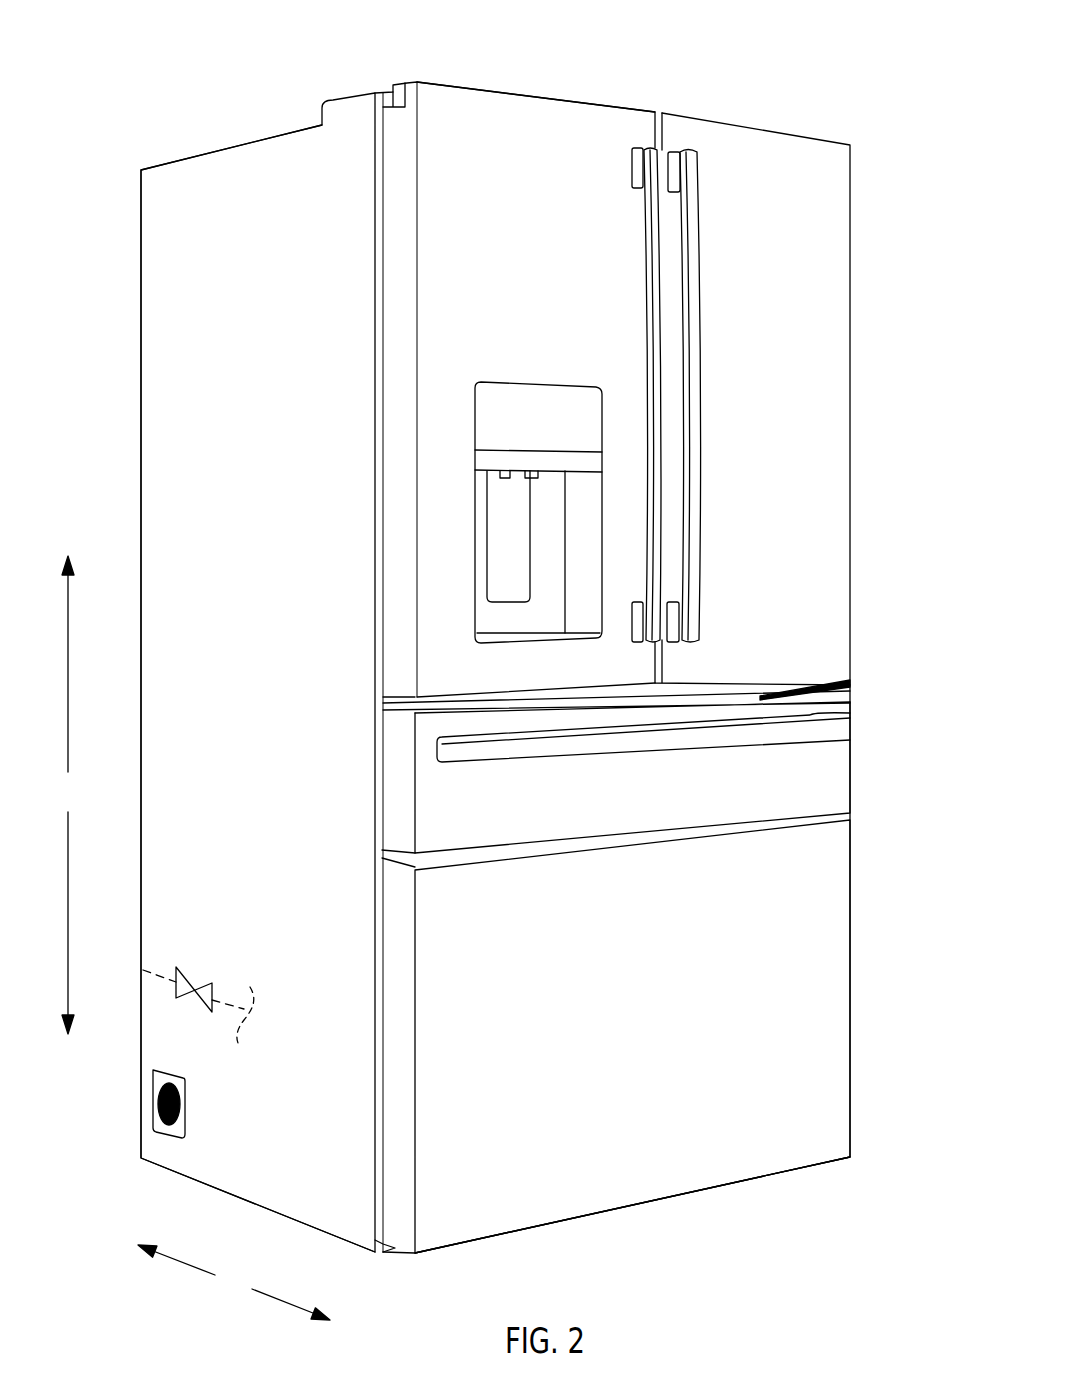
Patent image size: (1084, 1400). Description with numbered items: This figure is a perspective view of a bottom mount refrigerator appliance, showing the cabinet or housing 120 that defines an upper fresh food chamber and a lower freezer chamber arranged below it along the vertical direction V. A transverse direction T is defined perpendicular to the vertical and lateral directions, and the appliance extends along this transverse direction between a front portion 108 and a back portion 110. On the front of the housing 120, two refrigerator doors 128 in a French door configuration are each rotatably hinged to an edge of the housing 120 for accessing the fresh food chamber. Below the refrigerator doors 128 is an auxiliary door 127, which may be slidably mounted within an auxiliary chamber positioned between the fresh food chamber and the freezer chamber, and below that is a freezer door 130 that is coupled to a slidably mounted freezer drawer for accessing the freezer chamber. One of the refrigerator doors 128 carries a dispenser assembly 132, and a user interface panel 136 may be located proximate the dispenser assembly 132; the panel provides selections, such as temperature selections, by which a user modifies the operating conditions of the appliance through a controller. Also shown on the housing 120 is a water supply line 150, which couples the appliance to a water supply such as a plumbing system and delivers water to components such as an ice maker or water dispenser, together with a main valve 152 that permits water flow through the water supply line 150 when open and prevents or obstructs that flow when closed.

The front portion 108 is at (667, 1220).
The back portion 110 is at (125, 1058).
The housing 120 is at (193, 262).
The auxiliary door 127 is at (830, 773).
The refrigerator doors 128 is at (457, 108).
The freezer door 130 is at (827, 946).
The dispenser assembly 132 is at (468, 550).
The user interface panel 136 is at (520, 400).
The water supply line 150 is at (157, 972).
The main valve 152 is at (205, 980).